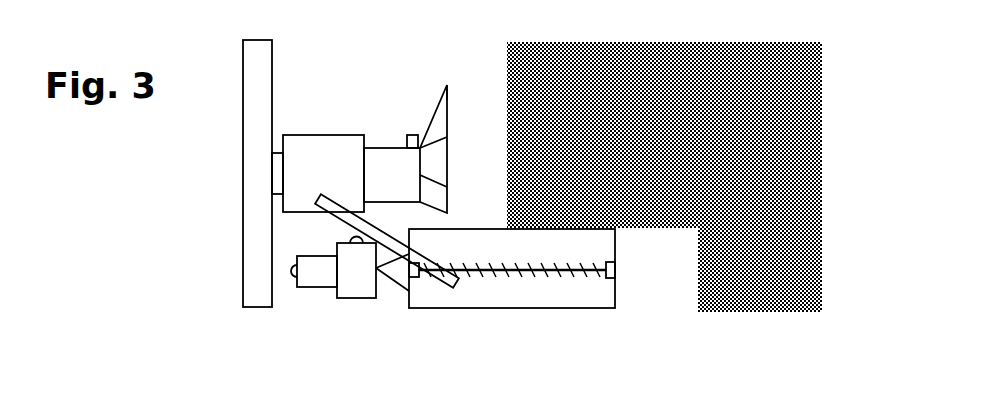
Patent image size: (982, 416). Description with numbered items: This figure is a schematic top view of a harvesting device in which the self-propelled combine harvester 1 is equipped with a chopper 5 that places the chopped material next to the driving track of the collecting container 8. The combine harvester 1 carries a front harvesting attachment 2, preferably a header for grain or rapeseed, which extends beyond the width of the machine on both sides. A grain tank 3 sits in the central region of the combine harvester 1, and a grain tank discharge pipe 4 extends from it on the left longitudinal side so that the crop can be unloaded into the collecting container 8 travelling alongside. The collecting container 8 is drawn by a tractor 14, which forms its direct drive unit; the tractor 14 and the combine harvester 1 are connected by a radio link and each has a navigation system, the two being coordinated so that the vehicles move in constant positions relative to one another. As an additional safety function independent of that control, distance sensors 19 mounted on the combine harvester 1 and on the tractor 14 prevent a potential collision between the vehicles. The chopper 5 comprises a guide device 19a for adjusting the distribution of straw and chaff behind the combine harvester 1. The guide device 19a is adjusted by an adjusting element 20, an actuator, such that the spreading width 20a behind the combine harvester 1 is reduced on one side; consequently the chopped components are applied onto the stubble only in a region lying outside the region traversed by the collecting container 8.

The combine harvester 1 is at (346, 115).
The front harvesting attachment 2 is at (260, 146).
The grain tank 3 is at (320, 152).
The grain tank discharge pipe 4 is at (346, 212).
The chopper 5 is at (443, 165).
The collecting container 8 is at (594, 322).
The tractor 14 is at (358, 288).
The distance sensors 19 is at (352, 238).
The guide device 19a is at (447, 95).
The adjusting element 20 is at (410, 135).
The spreading width 20a is at (757, 297).